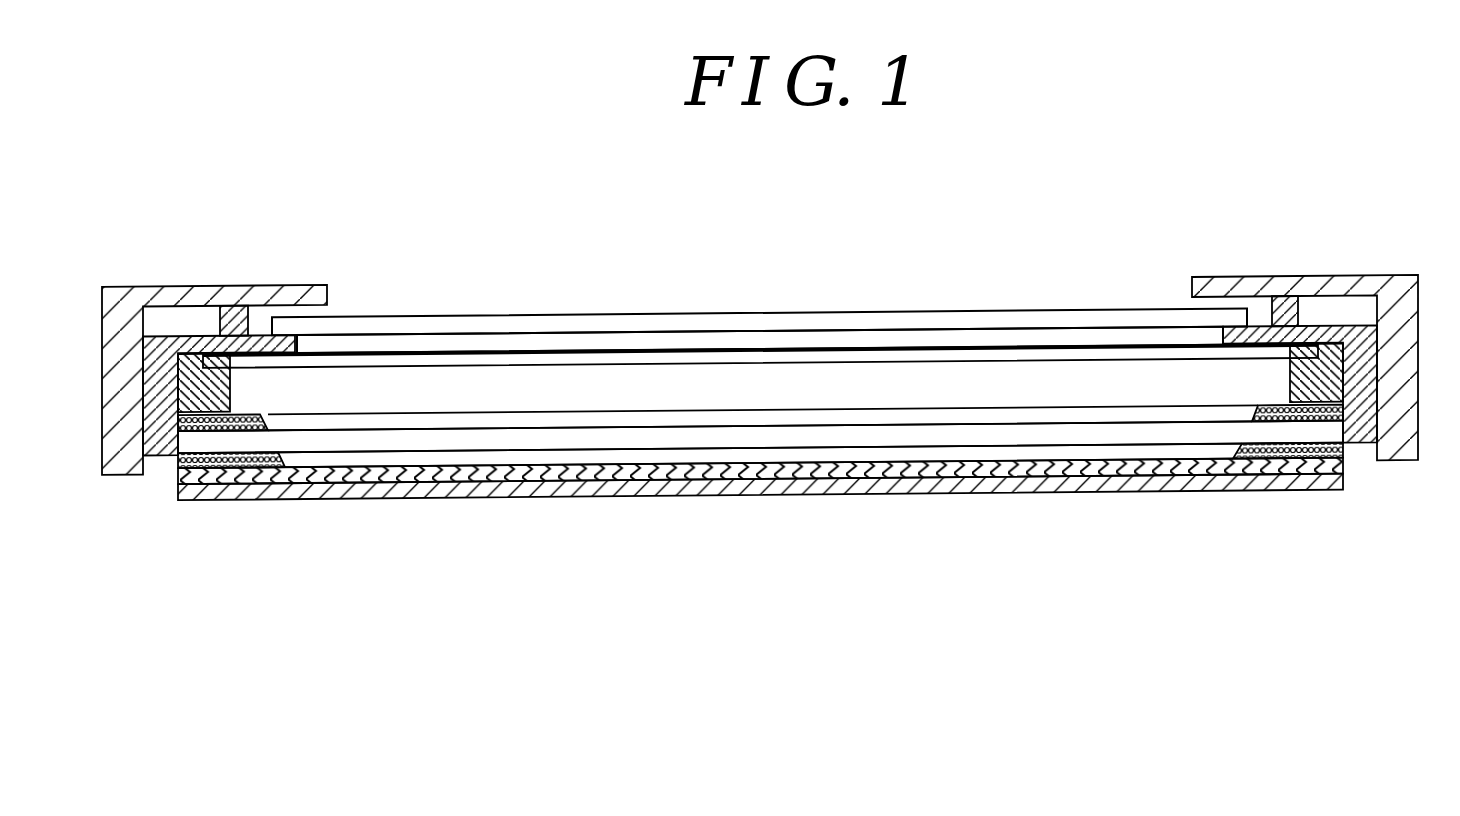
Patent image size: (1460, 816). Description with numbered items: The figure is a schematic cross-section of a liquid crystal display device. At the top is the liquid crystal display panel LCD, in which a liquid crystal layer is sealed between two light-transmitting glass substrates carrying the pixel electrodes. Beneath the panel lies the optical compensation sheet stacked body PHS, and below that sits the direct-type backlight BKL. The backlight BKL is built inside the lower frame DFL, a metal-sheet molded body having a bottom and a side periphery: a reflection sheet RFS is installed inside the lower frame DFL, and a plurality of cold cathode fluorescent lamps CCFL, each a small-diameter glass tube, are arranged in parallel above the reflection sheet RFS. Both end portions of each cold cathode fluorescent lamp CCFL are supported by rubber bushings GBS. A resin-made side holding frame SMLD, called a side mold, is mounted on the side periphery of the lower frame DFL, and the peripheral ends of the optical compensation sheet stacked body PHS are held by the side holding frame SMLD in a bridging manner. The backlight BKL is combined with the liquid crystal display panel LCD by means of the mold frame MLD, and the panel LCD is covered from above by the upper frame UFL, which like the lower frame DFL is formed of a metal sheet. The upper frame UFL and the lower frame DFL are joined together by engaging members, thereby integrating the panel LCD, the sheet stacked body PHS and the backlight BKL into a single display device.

The upper frame UFL is at (1363, 283).
The mold frame MLD is at (186, 350).
The liquid crystal display panel LCD is at (423, 320).
The optical compensation sheet stacked body PHS is at (983, 347).
The side holding frame SMLD is at (203, 385).
The rubber bushing GBS is at (1345, 457).
The cold cathode fluorescent lamp CCFL is at (832, 435).
The reflection sheet RFS is at (1300, 462).
The lower frame DFL is at (1198, 476).
The backlight BKL is at (562, 498).